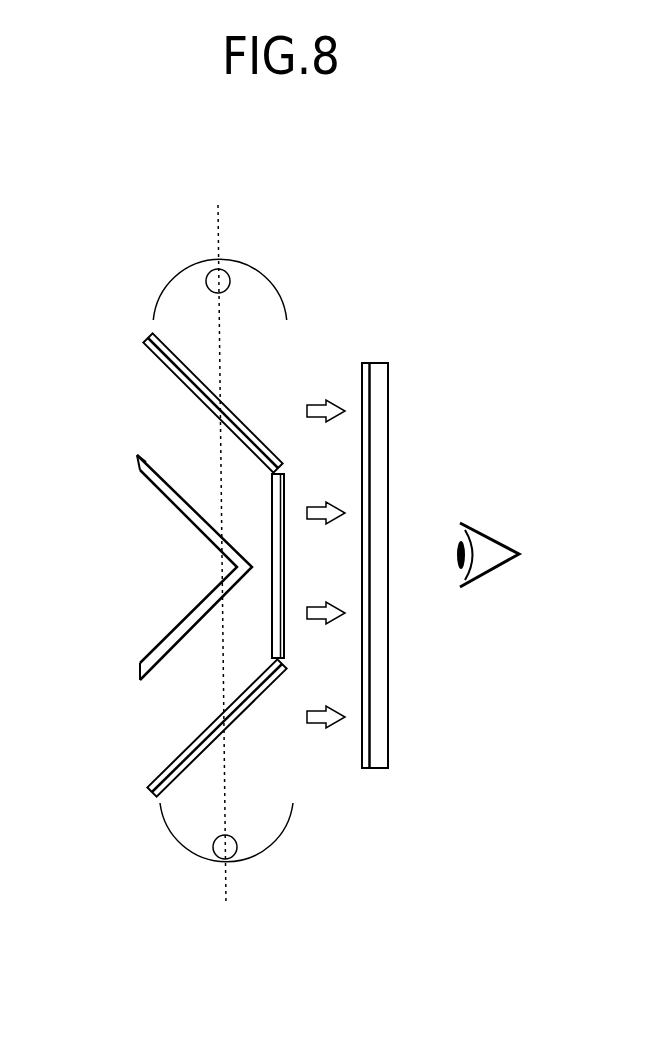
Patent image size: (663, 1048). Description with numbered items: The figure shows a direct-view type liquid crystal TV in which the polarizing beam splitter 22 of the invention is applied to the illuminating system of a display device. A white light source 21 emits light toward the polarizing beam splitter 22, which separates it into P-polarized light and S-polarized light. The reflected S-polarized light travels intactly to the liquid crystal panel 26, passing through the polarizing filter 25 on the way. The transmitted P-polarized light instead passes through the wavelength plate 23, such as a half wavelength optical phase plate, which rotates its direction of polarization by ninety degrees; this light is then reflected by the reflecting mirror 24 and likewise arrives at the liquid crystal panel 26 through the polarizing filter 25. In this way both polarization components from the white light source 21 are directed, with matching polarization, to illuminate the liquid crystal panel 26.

The white light source 21 is at (207, 281).
The polarizing beam splitter 22 is at (146, 339).
The wavelength plate 23 is at (284, 660).
The reflecting mirror 24 is at (137, 462).
The polarizing filter 25 is at (367, 770).
The liquid crystal panel 26 is at (383, 770).